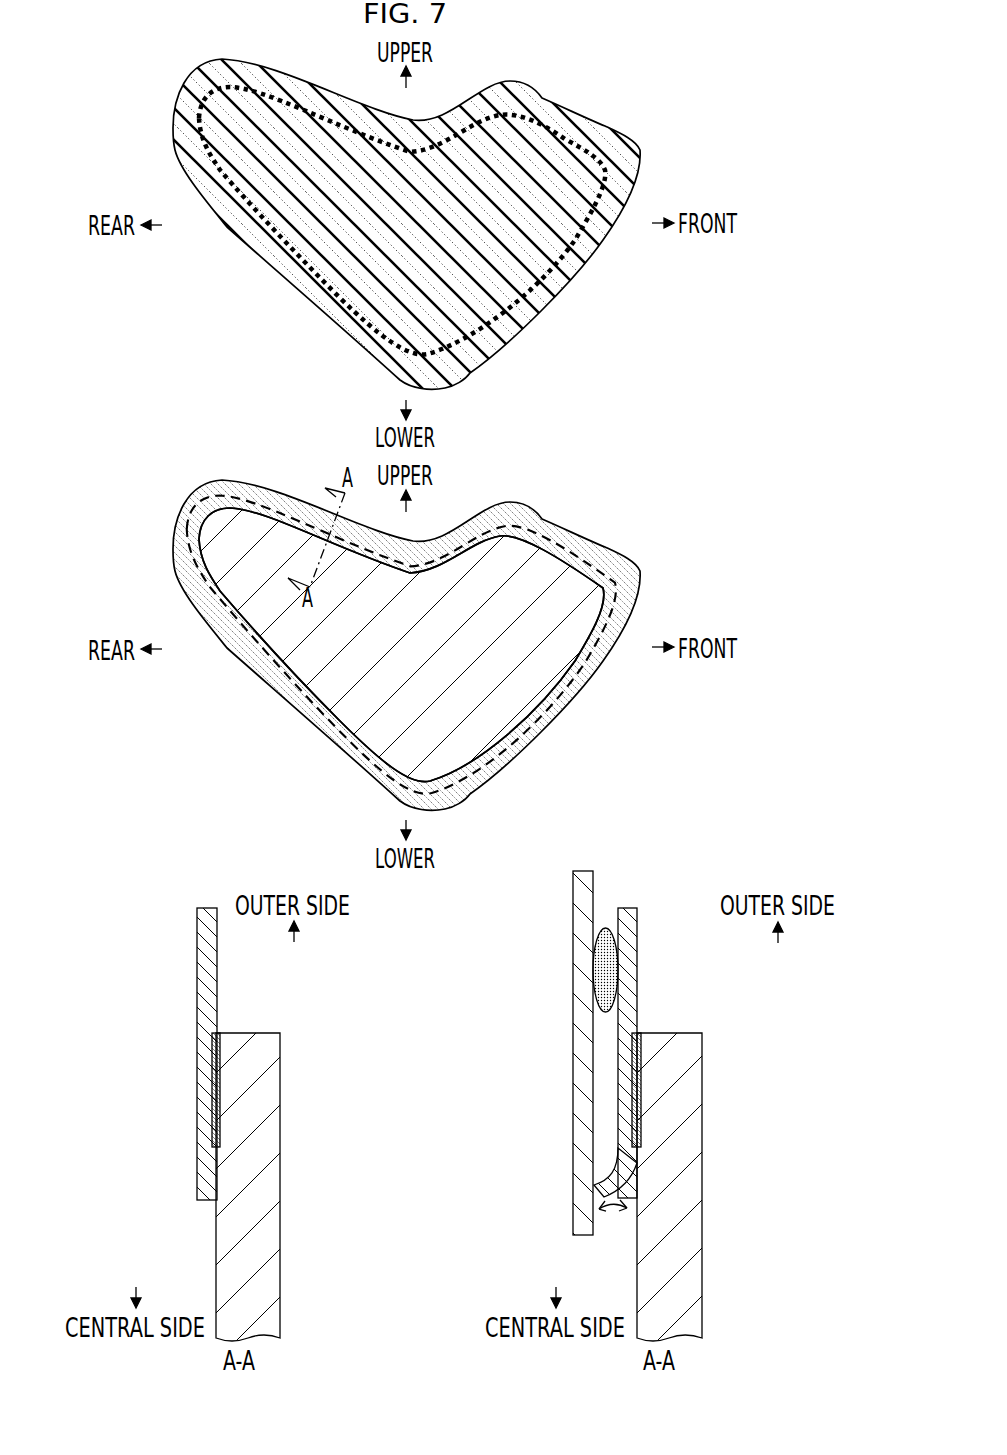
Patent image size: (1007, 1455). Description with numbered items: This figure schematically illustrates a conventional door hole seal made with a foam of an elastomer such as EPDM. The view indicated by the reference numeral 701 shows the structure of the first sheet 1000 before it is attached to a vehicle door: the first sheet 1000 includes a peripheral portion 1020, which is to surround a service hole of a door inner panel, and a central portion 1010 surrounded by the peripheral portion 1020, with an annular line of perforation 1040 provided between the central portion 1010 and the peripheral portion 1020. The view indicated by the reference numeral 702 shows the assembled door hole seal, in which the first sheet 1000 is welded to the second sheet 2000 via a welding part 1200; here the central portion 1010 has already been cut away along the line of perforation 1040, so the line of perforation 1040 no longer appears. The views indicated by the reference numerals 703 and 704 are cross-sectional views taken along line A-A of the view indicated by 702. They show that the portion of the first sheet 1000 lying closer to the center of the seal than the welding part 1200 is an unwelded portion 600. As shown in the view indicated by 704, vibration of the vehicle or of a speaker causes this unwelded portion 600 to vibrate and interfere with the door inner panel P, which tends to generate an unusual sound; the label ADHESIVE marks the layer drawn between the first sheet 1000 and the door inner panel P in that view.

The view of first sheet structure 701 is at (150, 78).
The view of conventional door hole seal 702 is at (150, 500).
The cross-sectional view 703 is at (150, 915).
The cross-sectional view 704 is at (524, 912).
The first sheet 1000 is at (628, 123).
The central portion 1010 is at (510, 163).
The peripheral portion 1020 is at (570, 112).
The line of perforation 1040 is at (310, 110).
The welding part 1200 is at (577, 683).
The second sheet 2000 is at (510, 587).
The unwelded portion 600 is at (197, 1147).
The door inner panel P is at (573, 1040).
The adhesive ADHESIVE is at (612, 960).